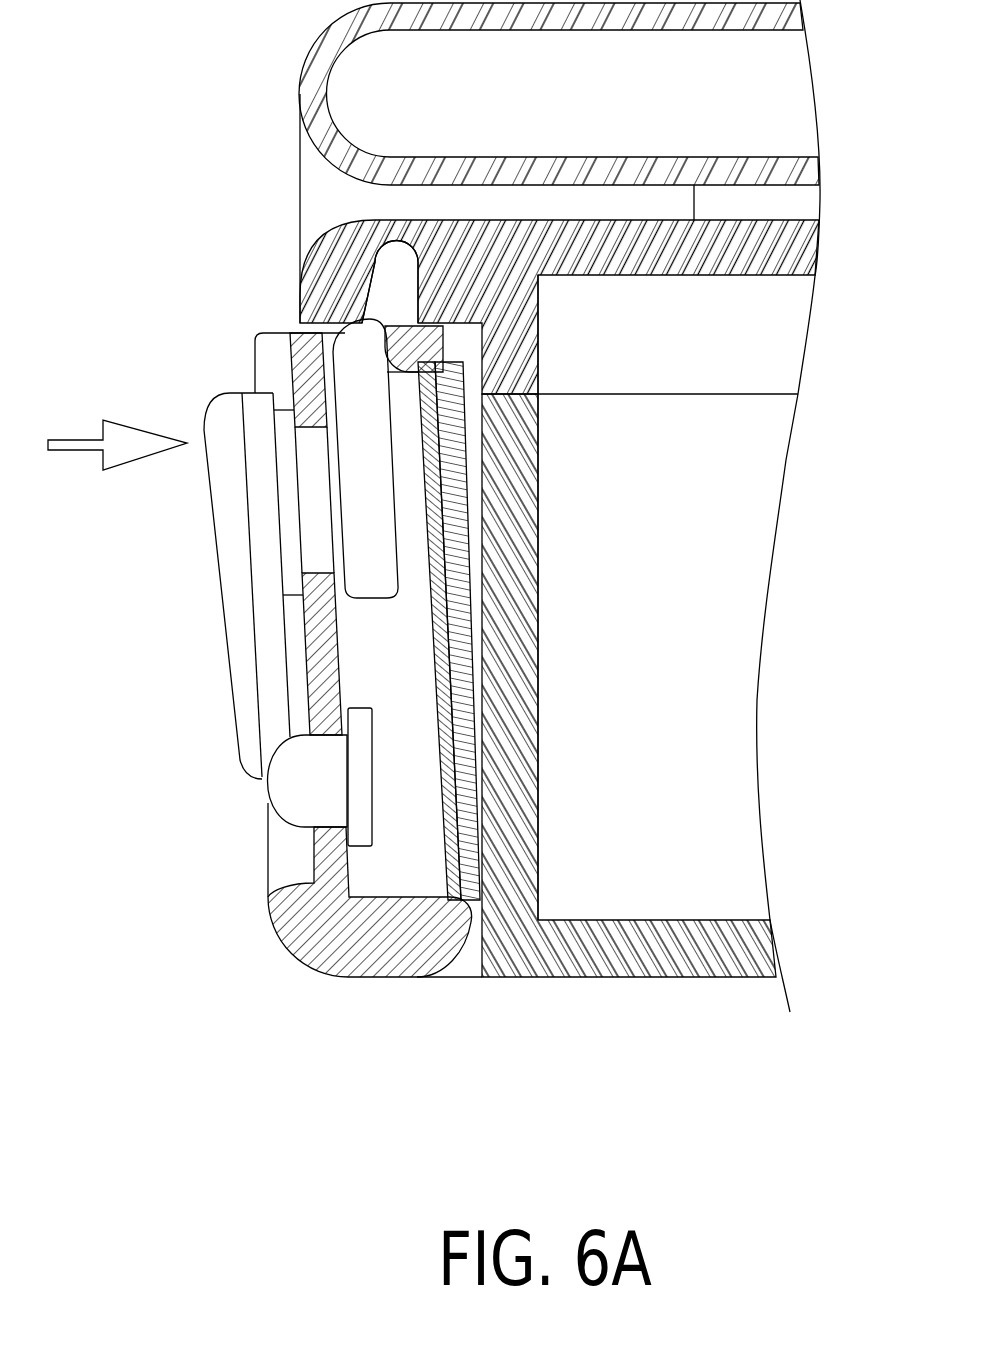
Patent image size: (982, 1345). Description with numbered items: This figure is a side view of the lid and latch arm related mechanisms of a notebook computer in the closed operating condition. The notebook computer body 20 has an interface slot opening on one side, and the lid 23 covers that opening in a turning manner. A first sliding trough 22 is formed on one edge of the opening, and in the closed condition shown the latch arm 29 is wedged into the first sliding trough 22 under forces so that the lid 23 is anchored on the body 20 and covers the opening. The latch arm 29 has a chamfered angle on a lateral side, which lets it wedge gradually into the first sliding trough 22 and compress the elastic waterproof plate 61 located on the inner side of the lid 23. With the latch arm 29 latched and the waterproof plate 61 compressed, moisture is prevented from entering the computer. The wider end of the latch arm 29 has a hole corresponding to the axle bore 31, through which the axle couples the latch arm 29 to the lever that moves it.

The notebook computer body 20 is at (322, 268).
The first sliding trough 22 is at (365, 260).
The lid 23 is at (310, 863).
The latch arm 29 is at (372, 580).
The axle bore 31 is at (303, 430).
The elastic waterproof plate 61 is at (468, 493).